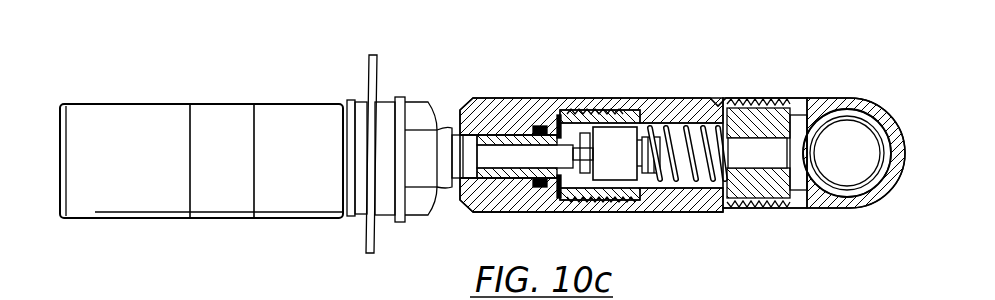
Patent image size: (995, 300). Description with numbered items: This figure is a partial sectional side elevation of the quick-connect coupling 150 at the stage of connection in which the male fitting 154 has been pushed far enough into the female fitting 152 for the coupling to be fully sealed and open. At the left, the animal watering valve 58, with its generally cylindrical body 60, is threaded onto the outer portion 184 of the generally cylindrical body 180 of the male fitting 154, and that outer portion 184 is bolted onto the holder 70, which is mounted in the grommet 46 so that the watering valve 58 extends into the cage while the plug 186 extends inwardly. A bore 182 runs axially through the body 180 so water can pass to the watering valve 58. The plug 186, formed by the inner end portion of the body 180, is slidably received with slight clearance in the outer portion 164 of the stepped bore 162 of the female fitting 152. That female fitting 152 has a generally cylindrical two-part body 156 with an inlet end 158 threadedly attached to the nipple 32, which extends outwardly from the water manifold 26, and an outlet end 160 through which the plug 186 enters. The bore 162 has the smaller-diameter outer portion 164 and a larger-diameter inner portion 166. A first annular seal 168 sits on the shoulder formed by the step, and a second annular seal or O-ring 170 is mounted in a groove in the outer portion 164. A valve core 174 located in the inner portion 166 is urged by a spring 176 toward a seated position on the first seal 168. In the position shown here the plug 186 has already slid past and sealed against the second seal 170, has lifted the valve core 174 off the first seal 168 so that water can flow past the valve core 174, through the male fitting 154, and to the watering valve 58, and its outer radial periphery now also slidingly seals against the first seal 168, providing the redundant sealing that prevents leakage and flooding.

The water manifold 26 is at (850, 195).
The nipple 32 is at (766, 135).
The grommet 46 is at (365, 63).
The animal watering valve 58 is at (173, 72).
The cylindrical body 60 is at (250, 213).
The holder 70 is at (387, 102).
The quick-connect coupling 150 is at (682, 107).
The female fitting 152 is at (687, 98).
The male fitting 154 is at (442, 125).
The two-part body 156 is at (707, 213).
The inlet end 158 is at (812, 108).
The outlet end 160 is at (457, 110).
The bore 162 is at (786, 112).
The outer portion 164 is at (510, 137).
The inner portion 166 is at (667, 189).
The first annular seal 168 is at (565, 123).
The second annular seal 170 is at (537, 125).
The valve core 174 is at (613, 140).
The spring 176 is at (697, 184).
The cylindrical body 180 is at (445, 190).
The bore 182 is at (512, 170).
The outer portion 184 is at (273, 103).
The plug 186 is at (523, 180).